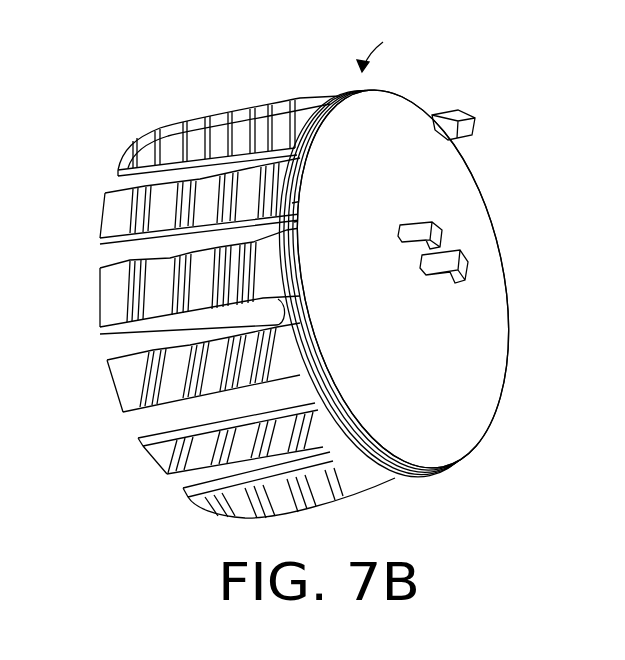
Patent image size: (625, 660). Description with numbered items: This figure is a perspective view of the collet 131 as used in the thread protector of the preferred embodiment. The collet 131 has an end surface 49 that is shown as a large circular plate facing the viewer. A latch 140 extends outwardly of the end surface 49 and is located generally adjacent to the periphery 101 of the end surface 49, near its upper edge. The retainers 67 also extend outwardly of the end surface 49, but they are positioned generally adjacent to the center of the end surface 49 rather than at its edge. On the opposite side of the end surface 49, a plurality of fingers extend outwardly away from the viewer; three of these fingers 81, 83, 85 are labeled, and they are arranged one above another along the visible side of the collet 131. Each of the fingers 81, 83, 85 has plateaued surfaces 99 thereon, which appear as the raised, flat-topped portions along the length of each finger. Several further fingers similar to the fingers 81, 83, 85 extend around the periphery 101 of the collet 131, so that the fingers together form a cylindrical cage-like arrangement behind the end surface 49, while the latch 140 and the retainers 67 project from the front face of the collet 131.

The end surface 49 is at (400, 107).
The retainers 67 is at (455, 252).
The finger 81 is at (105, 213).
The finger 83 is at (100, 288).
The finger 85 is at (110, 388).
The plateaued surfaces 99 is at (127, 197).
The periphery 101 is at (498, 244).
The collet 131 is at (393, 47).
The latch 140 is at (455, 112).